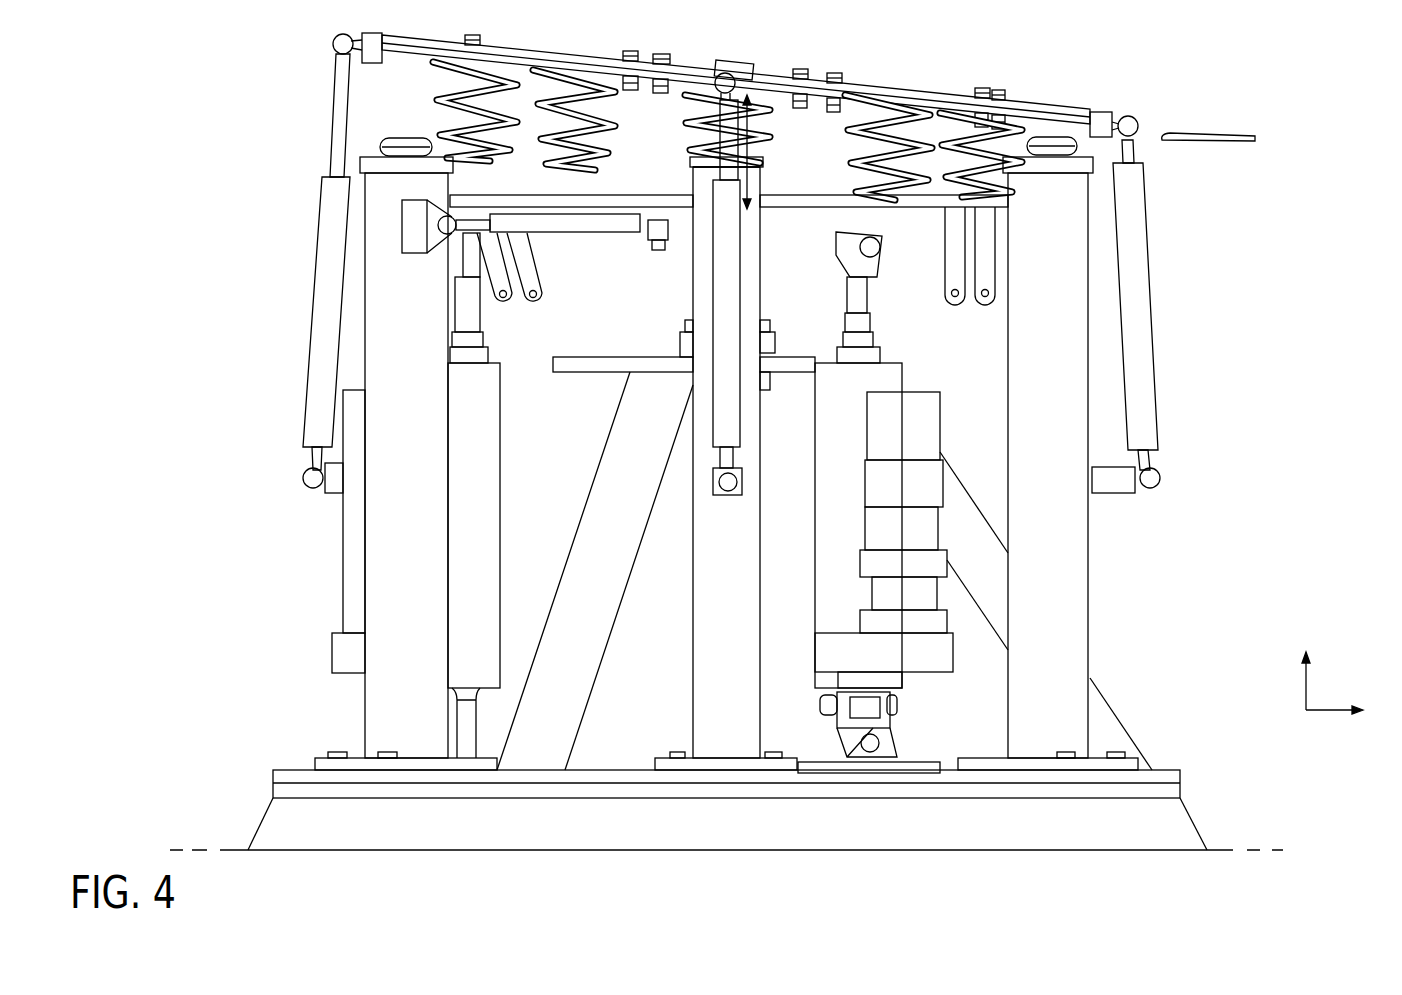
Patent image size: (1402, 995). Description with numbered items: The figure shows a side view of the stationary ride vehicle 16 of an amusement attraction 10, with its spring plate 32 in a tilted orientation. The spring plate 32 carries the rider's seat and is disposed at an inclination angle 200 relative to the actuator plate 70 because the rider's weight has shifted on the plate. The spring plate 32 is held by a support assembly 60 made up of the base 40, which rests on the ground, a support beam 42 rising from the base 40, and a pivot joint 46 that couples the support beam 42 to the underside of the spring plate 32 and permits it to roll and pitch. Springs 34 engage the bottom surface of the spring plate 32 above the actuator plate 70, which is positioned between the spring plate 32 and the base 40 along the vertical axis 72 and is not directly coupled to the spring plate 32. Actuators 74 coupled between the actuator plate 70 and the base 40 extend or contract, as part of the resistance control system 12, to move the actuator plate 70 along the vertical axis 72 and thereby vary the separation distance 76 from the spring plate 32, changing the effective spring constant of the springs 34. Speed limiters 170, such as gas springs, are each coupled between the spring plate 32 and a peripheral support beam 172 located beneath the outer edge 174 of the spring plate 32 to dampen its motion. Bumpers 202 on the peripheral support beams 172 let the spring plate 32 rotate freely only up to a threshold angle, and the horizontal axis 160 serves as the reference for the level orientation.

The amusement attraction 10 is at (1085, 22).
The resistance control system 12 is at (1068, 60).
The ride vehicle 16 is at (1203, 97).
The spring plate 32 is at (928, 82).
The springs 34 is at (528, 115).
The base 40 is at (1193, 805).
The support beam 42 is at (688, 612).
The pivot joint 46 is at (766, 104).
The support assembly 60 is at (737, 455).
The actuator plate 70 is at (608, 218).
The vertical axis 72 is at (1302, 687).
The actuators 74 is at (490, 355).
The separation distance 76 is at (763, 173).
The horizontal axis 160 is at (1328, 707).
The speed limiters 170 is at (312, 298).
The peripheral support beam 172 is at (365, 707).
The outer edge 174 is at (415, 50).
The inclination angle 200 is at (1166, 136).
The bumpers 202 is at (383, 140).